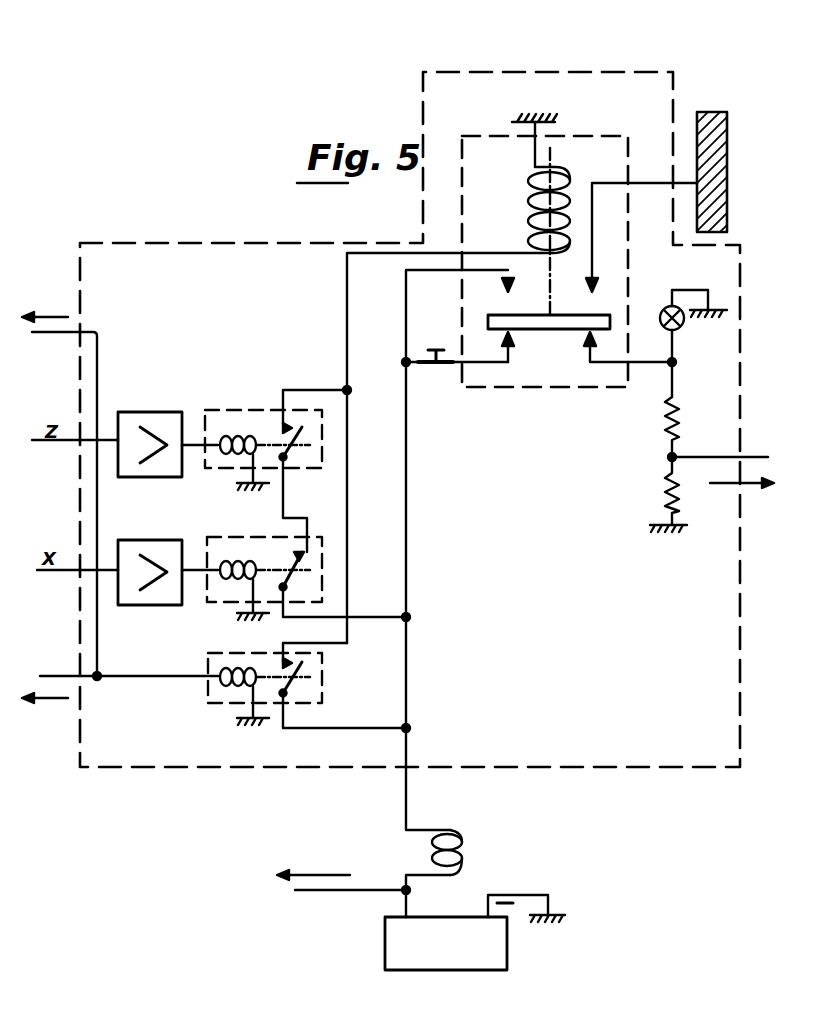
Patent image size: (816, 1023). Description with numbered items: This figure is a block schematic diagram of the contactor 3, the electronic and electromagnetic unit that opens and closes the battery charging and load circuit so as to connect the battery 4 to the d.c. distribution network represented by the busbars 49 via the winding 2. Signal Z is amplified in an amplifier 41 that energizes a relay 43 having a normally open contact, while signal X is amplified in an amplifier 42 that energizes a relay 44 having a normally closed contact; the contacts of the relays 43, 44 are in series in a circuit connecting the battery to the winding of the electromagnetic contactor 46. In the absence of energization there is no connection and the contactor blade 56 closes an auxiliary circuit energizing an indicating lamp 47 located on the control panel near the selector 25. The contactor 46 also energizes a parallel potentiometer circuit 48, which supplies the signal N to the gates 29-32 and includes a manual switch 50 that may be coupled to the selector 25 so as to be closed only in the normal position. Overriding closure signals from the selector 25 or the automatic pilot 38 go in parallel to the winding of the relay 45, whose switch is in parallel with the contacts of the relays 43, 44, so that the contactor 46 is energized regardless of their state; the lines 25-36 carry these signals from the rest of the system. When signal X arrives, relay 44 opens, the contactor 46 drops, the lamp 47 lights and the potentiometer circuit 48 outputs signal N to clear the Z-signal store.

The winding 2 is at (462, 848).
The contactor 3 is at (273, 240).
The battery 4 is at (445, 968).
The selector 25 is at (49, 307).
The automatic pilot 38 is at (46, 713).
The amplifier 41 is at (155, 412).
The amplifier 42 is at (152, 540).
The relay 43 is at (248, 410).
The relay 44 is at (250, 537).
The relay 45 is at (250, 653).
The electromagnetic contactor 46 is at (552, 382).
The indicating lamp 47 is at (664, 308).
The potentiometer circuit 48 is at (678, 413).
The busbars 49 is at (722, 128).
The manual switch 50 is at (430, 347).
The contactor blade 56 is at (537, 328).
The gates 29-32 is at (723, 472).
The output lines 25-36 is at (341, 871).